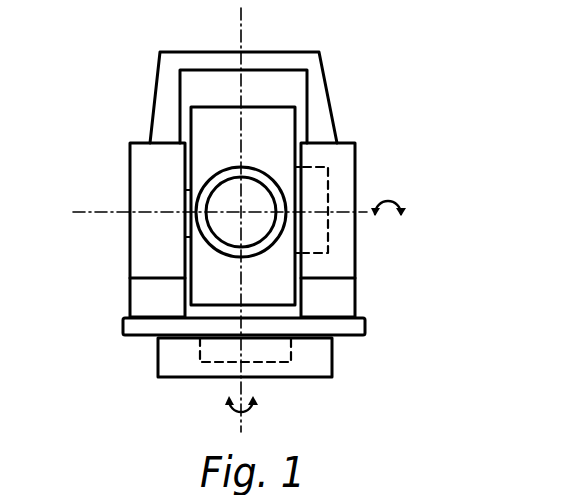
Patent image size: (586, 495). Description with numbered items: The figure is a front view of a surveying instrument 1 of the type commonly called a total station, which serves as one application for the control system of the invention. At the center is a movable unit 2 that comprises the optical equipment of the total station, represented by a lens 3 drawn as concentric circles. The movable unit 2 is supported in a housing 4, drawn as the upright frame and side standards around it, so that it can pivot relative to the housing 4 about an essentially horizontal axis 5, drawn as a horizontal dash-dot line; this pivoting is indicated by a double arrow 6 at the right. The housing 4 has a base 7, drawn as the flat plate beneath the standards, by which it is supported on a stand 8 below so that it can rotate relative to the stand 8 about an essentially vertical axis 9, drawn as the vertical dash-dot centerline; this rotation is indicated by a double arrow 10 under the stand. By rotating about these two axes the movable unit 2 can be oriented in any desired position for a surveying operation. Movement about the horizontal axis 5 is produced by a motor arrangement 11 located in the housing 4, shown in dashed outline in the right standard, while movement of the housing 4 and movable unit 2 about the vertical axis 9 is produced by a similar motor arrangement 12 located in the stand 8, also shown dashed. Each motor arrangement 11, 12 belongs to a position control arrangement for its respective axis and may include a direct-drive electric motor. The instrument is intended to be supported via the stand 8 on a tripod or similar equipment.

The surveying instrument 1 is at (380, 70).
The movable unit 2 is at (269, 150).
The lens 3 is at (231, 200).
The housing 4 is at (360, 156).
The horizontal axis 5 is at (85, 208).
The double arrow 6 is at (388, 200).
The base 7 is at (363, 327).
The stand 8 is at (333, 368).
The vertical axis 9 is at (244, 28).
The double arrow 10 is at (248, 406).
The motor arrangement 11 is at (316, 237).
The motor arrangement 12 is at (272, 350).